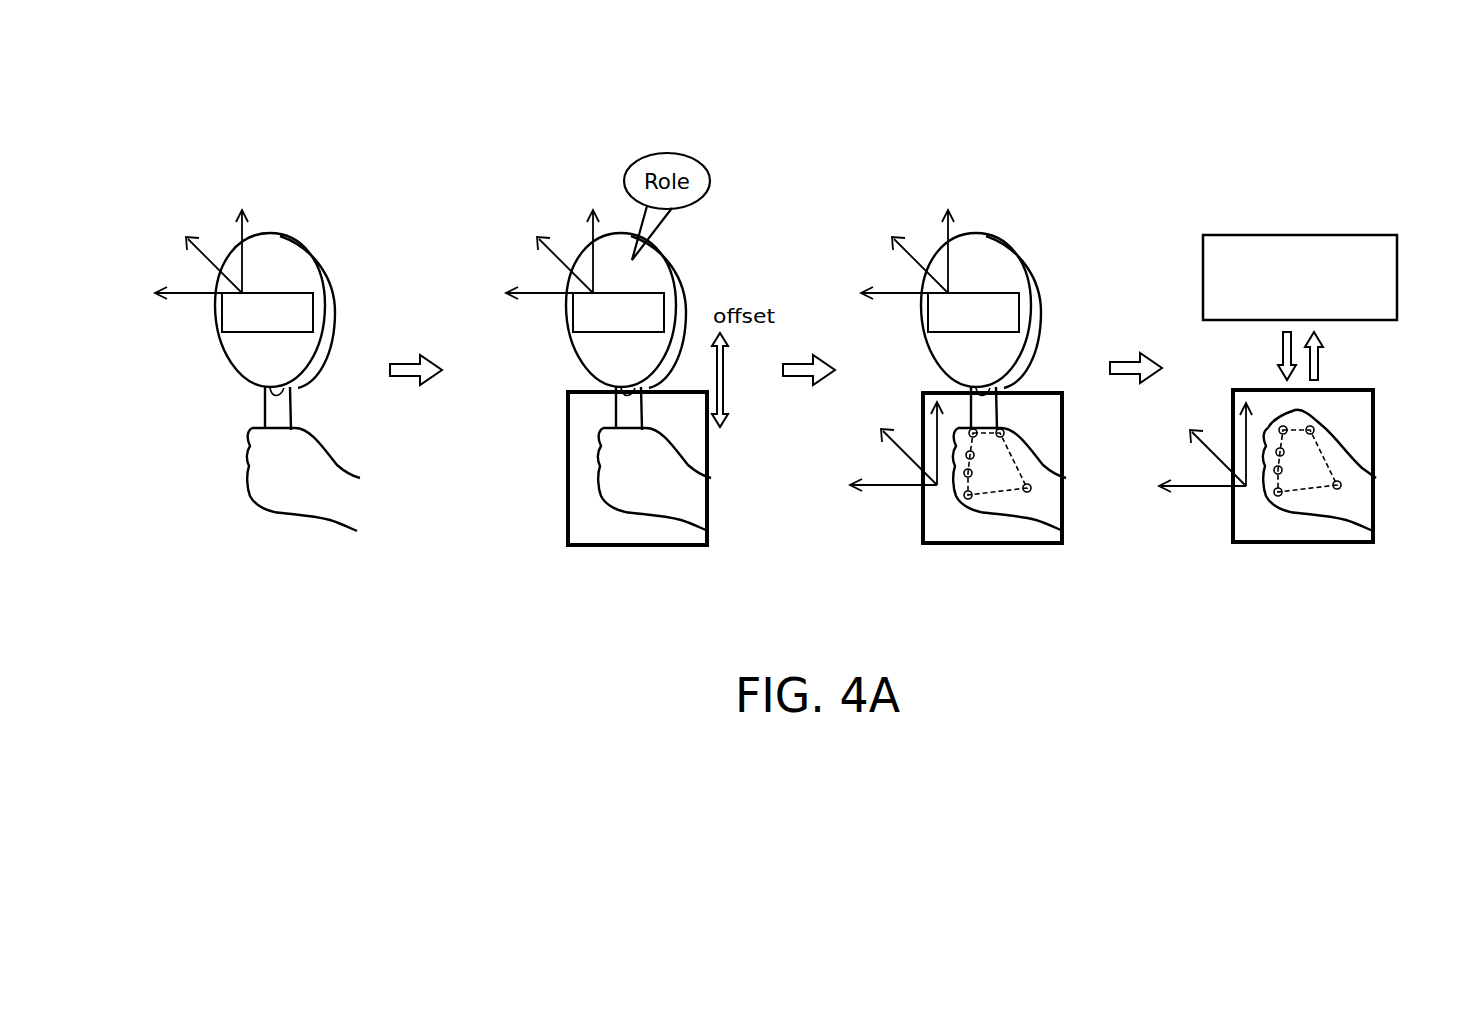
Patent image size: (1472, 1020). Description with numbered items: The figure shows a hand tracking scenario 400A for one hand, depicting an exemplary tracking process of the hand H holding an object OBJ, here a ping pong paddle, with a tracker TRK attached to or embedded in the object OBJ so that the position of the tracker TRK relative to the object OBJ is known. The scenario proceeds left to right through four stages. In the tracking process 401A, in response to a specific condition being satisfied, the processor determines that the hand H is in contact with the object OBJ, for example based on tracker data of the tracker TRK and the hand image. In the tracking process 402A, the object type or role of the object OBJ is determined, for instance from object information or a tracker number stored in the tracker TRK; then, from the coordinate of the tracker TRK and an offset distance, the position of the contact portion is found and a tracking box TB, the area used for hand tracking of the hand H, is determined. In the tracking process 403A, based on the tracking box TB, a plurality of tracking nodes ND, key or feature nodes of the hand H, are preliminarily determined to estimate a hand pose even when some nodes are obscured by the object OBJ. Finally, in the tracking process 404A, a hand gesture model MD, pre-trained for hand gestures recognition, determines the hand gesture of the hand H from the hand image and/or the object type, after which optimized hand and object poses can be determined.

The tracking process 401A is at (197, 156).
The tracking process 402A is at (550, 156).
The tracking process 403A is at (903, 156).
The tracking process 404A is at (1242, 183).
The hand tracking scenario 400A is at (1443, 657).
The tracker TRK is at (222, 310).
The object OBJ is at (240, 366).
The hand H is at (292, 497).
The tracking box TB is at (638, 548).
The tracking nodes ND is at (1020, 452).
The hand gesture model MD is at (1398, 277).